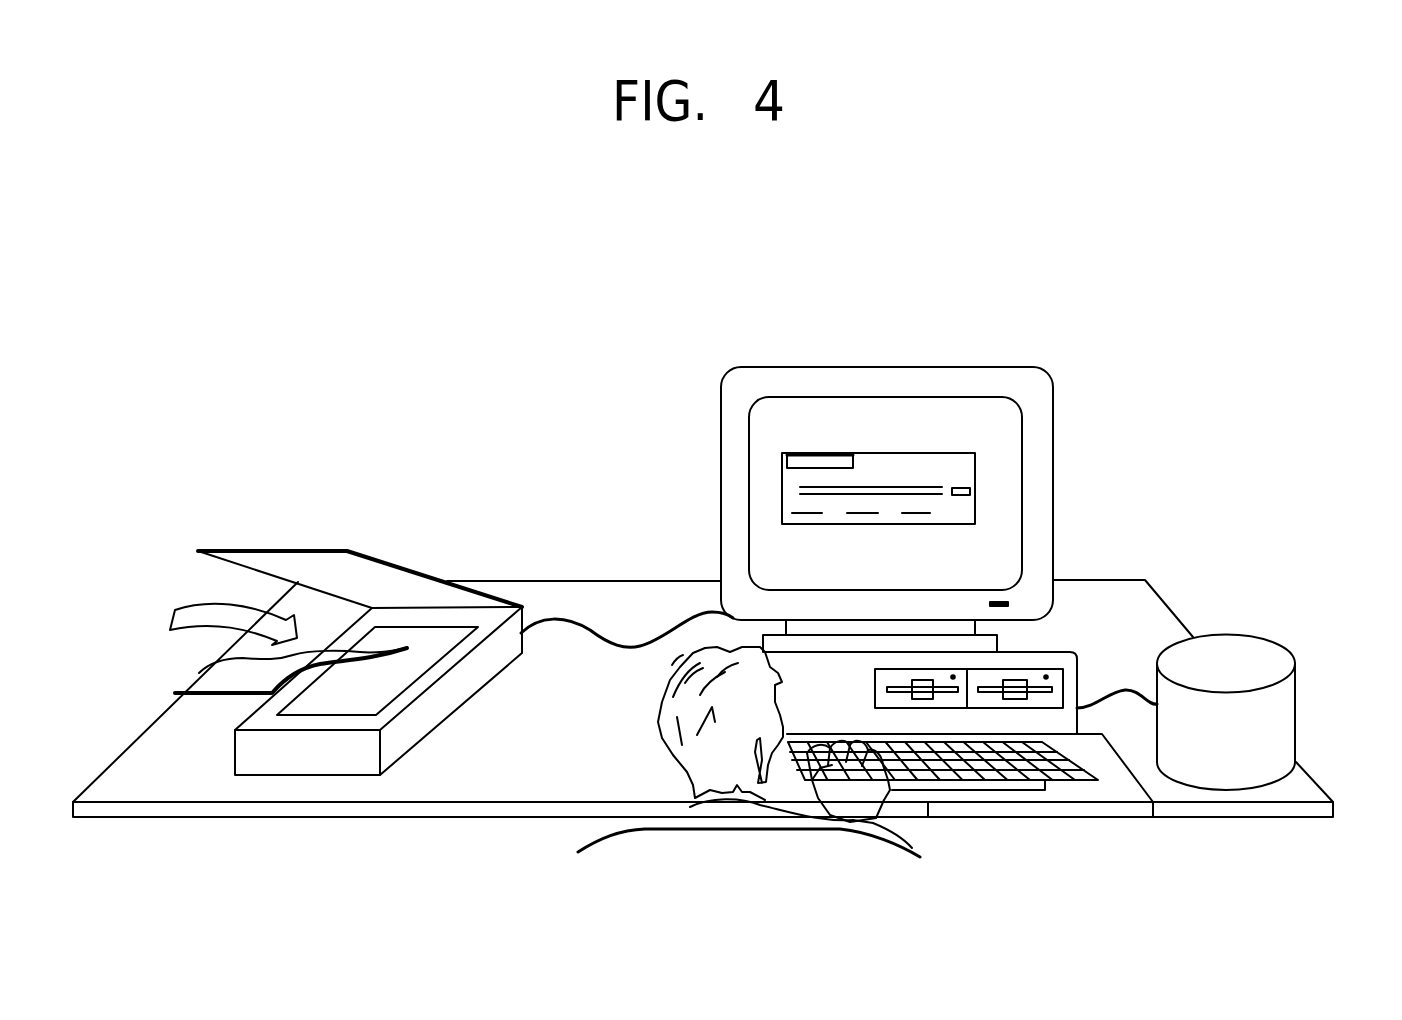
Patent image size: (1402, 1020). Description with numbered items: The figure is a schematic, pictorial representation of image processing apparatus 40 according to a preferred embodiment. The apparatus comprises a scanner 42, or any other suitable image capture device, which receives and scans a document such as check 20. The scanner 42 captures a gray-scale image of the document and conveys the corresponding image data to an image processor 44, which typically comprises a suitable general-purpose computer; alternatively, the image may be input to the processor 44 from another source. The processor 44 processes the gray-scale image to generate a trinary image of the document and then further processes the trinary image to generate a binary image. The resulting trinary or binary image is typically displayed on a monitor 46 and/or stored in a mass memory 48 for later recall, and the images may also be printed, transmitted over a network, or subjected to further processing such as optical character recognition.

The check 20 is at (205, 682).
The image processing apparatus 40 is at (1260, 267).
The scanner 42 is at (380, 560).
The image processor 44 is at (1062, 658).
The monitor 46 is at (1025, 371).
The mass memory 48 is at (1287, 722).